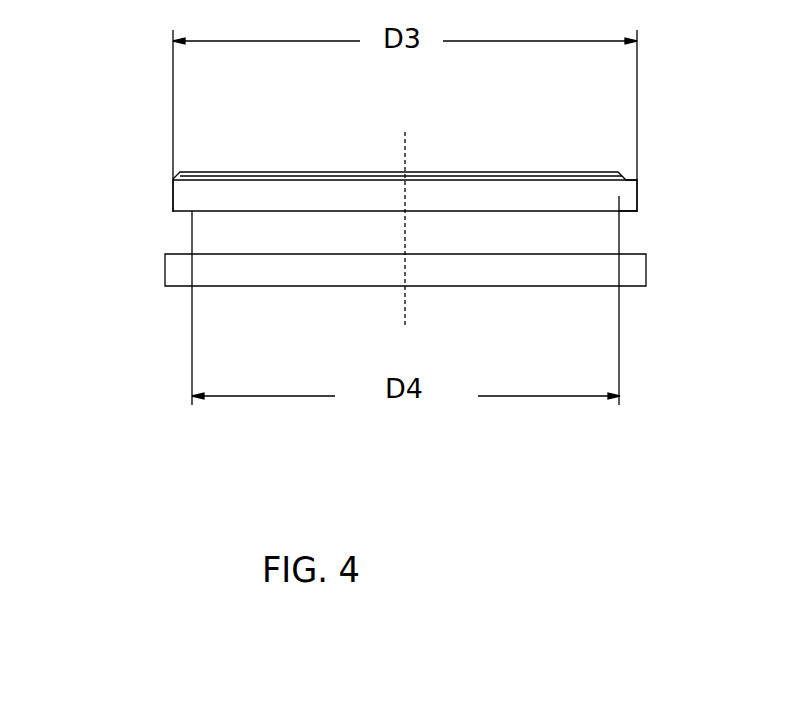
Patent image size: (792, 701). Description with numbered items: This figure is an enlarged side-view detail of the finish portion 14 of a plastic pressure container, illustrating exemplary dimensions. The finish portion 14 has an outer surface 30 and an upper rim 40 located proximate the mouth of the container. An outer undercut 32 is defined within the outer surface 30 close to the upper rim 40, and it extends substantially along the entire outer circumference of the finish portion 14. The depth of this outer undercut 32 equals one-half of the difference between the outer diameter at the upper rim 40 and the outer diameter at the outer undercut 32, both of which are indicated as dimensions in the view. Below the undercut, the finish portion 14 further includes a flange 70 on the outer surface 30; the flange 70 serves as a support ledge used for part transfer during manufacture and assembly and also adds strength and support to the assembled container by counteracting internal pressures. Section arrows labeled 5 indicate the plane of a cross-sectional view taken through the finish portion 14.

The finish portion 14 is at (96, 80).
The upper rim 40 is at (217, 173).
The outer undercut 32 is at (627, 205).
The outer surface 30 is at (621, 227).
The flange 70 is at (640, 270).
The section line 5 is at (405, 132).